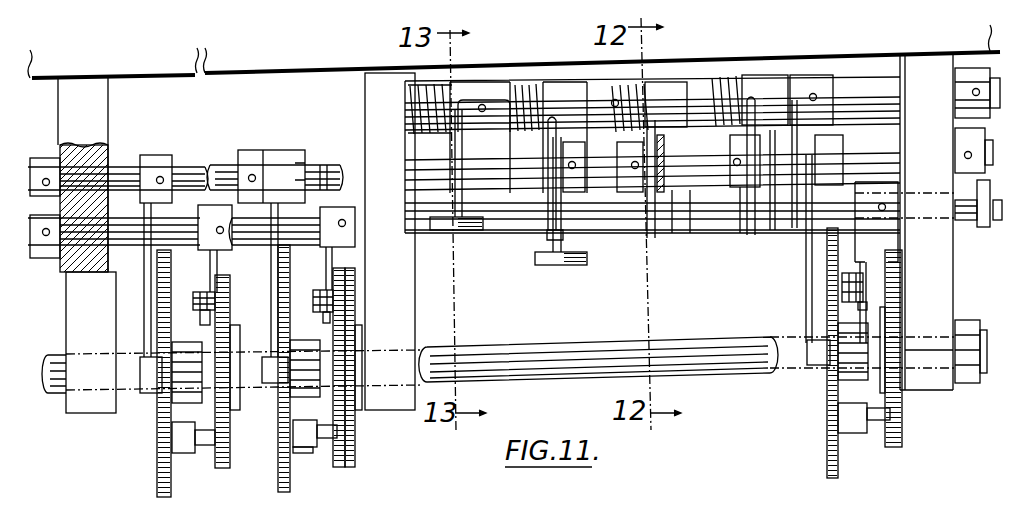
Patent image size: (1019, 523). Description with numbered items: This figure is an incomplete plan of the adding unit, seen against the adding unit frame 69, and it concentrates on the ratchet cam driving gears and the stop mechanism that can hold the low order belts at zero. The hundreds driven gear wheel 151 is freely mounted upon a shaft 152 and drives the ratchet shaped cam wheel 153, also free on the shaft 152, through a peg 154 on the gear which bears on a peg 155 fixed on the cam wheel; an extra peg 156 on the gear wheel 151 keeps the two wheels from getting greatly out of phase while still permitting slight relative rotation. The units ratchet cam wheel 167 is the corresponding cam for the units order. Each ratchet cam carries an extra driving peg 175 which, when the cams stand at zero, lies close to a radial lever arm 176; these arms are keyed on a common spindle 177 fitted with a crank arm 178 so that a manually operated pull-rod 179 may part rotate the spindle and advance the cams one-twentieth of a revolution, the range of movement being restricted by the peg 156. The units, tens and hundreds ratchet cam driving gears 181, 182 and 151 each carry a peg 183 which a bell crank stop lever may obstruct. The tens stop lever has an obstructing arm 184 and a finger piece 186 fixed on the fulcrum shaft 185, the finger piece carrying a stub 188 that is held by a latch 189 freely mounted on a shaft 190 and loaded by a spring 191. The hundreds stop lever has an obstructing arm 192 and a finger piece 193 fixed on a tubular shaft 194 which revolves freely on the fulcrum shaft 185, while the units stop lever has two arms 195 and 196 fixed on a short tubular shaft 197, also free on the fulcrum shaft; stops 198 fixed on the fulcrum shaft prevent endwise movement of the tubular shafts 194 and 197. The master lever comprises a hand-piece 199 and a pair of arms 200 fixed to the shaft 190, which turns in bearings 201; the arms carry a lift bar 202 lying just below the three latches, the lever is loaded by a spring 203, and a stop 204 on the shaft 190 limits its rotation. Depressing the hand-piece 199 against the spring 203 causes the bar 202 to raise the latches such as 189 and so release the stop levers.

The adding unit frame 69 is at (514, 51).
The driven gear wheel 151 is at (280, 460).
The shaft 152 is at (579, 382).
The ratchet shaped cam wheel 153 is at (356, 447).
The peg 154 is at (314, 452).
The peg 155 is at (336, 460).
The extra peg 156 is at (296, 420).
The units ratchet cam wheel 167 is at (886, 442).
The extra driving peg 175 is at (193, 294).
The radial lever arm 176 is at (216, 258).
The spindle 177 is at (140, 240).
The crank arm 178 is at (955, 238).
The pull-rod 179 is at (978, 220).
The units ratchet cam driving gear 181 is at (824, 448).
The tens ratchet cam driving gear 182 is at (160, 462).
The peg 183 is at (150, 394).
The obstructing arm 184 is at (125, 332).
The fulcrum shaft 185 is at (130, 158).
The finger piece 186 is at (706, 196).
The stub 188 is at (670, 166).
The latch 189 is at (662, 237).
The shaft 190 is at (714, 78).
The loading spring 191 is at (610, 83).
The obstructing arm 192 is at (264, 305).
The finger piece 193 is at (561, 266).
The tubular shaft 194 is at (410, 169).
The arm 195 is at (773, 220).
The arm 196 is at (808, 262).
The short tubular shaft 197 is at (774, 80).
The stop 198 is at (250, 140).
The hand-piece 199 is at (441, 233).
The arm 200 is at (508, 225).
The bearing 201 is at (661, 137).
The lift bar 202 is at (626, 217).
The spring 203 is at (409, 78).
The stop 204 is at (954, 67).